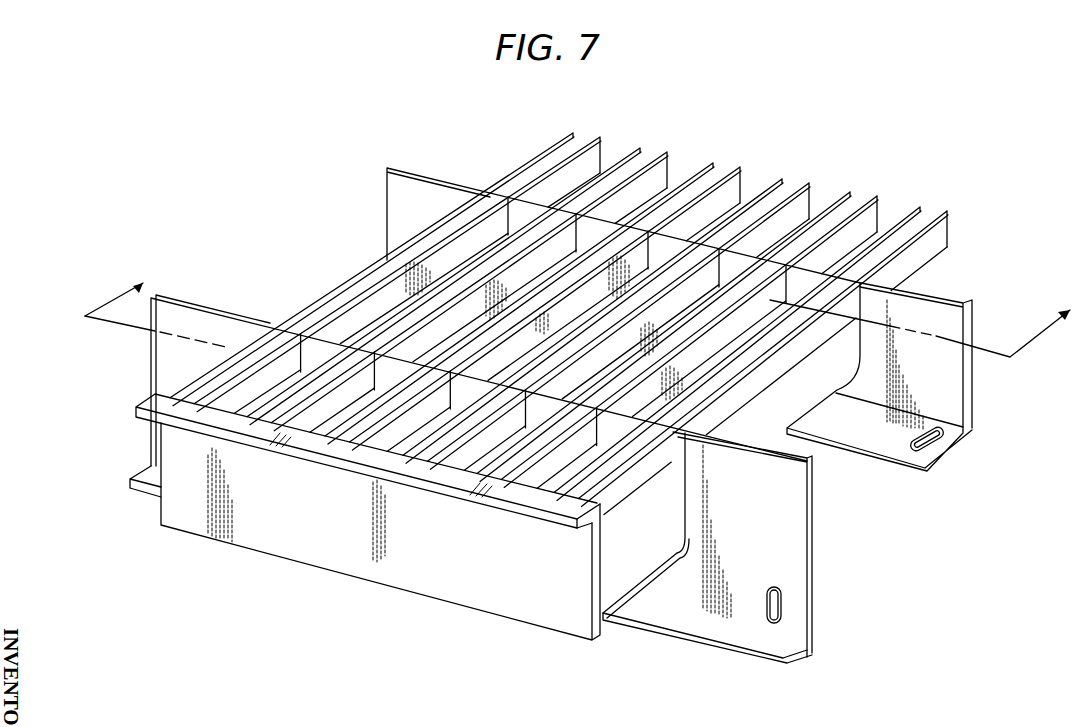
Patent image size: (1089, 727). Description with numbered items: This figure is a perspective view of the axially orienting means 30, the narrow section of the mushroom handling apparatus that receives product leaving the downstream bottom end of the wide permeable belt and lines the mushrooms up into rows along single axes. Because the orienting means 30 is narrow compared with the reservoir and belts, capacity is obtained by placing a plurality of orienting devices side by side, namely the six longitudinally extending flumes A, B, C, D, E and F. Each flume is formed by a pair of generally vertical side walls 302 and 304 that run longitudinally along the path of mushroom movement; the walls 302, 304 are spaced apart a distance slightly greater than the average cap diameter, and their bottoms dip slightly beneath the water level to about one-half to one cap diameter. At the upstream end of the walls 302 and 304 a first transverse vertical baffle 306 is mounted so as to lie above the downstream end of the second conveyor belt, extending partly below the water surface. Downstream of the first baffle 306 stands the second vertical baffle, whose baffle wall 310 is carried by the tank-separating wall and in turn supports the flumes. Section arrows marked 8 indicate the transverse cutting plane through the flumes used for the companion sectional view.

The axially orienting means 30 is at (291, 180).
The side wall 302 is at (575, 306).
The side wall 304 is at (288, 348).
The first transverse vertical baffle 306 is at (370, 534).
The baffle wall 310 is at (754, 519).
The section line 8- 8 is at (569, 333).
The flume A is at (586, 138).
The flume B is at (650, 158).
The flume C is at (724, 172).
The flume D is at (788, 187).
The flume E is at (860, 200).
The flume F is at (932, 215).